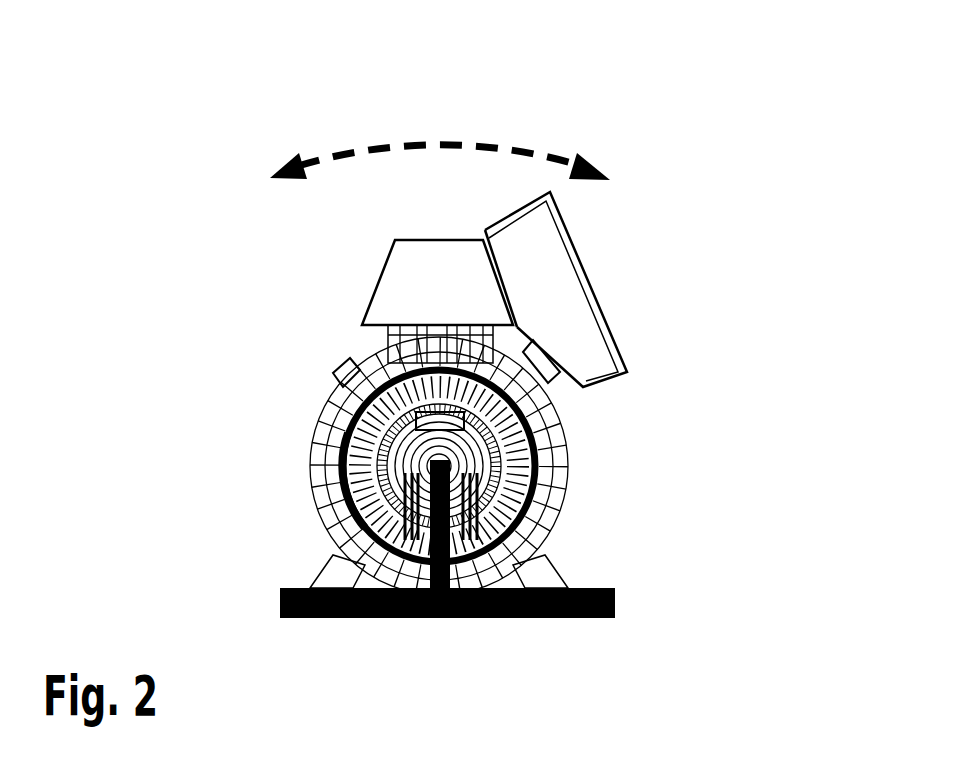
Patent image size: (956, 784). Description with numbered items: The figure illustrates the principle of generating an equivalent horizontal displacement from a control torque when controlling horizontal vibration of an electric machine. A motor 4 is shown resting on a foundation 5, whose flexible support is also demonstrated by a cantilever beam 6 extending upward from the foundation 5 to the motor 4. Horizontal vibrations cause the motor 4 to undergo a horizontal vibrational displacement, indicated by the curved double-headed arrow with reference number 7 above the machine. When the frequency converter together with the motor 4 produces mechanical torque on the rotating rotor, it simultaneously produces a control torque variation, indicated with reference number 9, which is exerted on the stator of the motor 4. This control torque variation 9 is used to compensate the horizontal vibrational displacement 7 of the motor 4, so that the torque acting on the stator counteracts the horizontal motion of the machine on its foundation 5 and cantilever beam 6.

The motor 4 is at (522, 393).
The foundation 5 is at (615, 600).
The cantilever beam 6 is at (455, 548).
The horizontal vibrational displacement u(t) 7 is at (510, 148).
The control torque variation T(t) 9 is at (570, 422).